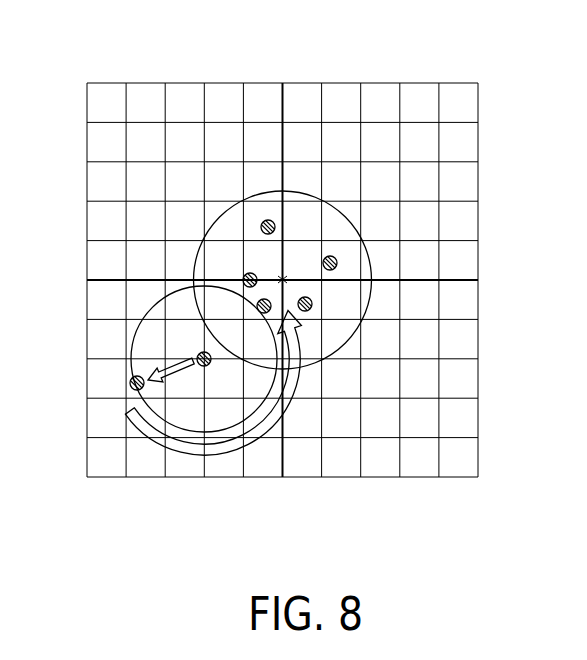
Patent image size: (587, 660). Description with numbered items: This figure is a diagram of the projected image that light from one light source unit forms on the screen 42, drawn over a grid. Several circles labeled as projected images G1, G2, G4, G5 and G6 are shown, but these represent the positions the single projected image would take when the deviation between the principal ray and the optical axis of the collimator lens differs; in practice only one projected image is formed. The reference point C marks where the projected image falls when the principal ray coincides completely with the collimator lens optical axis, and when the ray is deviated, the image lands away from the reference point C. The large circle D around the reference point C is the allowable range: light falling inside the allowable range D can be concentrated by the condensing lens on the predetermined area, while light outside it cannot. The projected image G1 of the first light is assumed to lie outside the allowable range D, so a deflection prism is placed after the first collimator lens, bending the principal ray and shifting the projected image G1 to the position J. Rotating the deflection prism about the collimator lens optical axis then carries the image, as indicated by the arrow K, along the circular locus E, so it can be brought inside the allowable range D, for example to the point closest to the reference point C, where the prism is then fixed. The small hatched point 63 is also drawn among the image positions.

The screen 42 is at (455, 100).
The point 63 is at (337, 260).
The projected image G1 is at (197, 356).
The projected image G2 is at (265, 221).
The projected image G4 is at (250, 273).
The projected image G5 is at (258, 302).
The projected image G6 is at (312, 303).
The reference point C is at (285, 278).
The allowable range D is at (345, 212).
The circle E is at (136, 376).
The position J is at (147, 379).
The arrow K is at (178, 456).